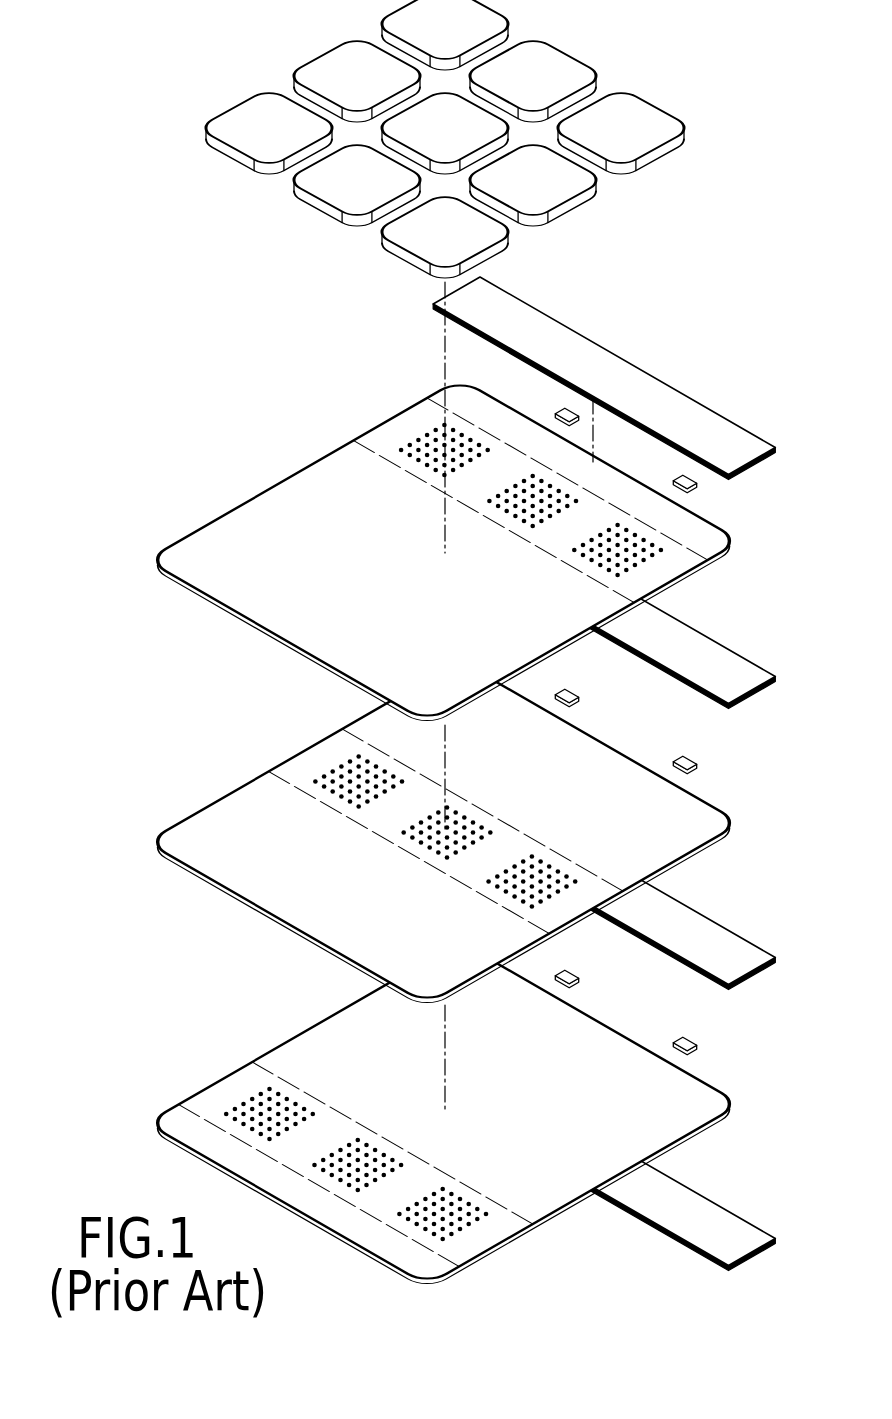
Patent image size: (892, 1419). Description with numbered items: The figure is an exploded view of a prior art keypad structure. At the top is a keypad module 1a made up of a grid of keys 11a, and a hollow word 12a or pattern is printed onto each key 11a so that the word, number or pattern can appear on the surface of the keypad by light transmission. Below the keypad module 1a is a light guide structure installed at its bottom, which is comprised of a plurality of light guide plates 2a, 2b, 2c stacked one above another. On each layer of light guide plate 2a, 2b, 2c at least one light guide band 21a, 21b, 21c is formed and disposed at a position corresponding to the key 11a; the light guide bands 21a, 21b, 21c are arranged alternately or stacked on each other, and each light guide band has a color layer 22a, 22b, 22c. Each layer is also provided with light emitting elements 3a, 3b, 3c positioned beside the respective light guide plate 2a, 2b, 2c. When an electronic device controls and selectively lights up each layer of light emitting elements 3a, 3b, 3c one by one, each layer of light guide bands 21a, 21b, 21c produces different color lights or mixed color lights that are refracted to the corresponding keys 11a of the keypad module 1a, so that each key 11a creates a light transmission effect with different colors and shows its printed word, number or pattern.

The keypad module 1a is at (493, 141).
The key 11a is at (673, 92).
The hollow word 12a is at (640, 117).
The light guide plate 2a is at (444, 528).
The light guide plate 2b is at (403, 833).
The light guide plate 2c is at (392, 1115).
The light guide band 21a is at (422, 437).
The light guide band 21b is at (335, 768).
The light guide band 21c is at (247, 1100).
The color layer 22a is at (400, 468).
The color layer 22b is at (313, 798).
The color layer 22c is at (307, 1087).
The light emitting element 3a is at (698, 482).
The light emitting element 3b is at (698, 763).
The light emitting element 3c is at (698, 1044).